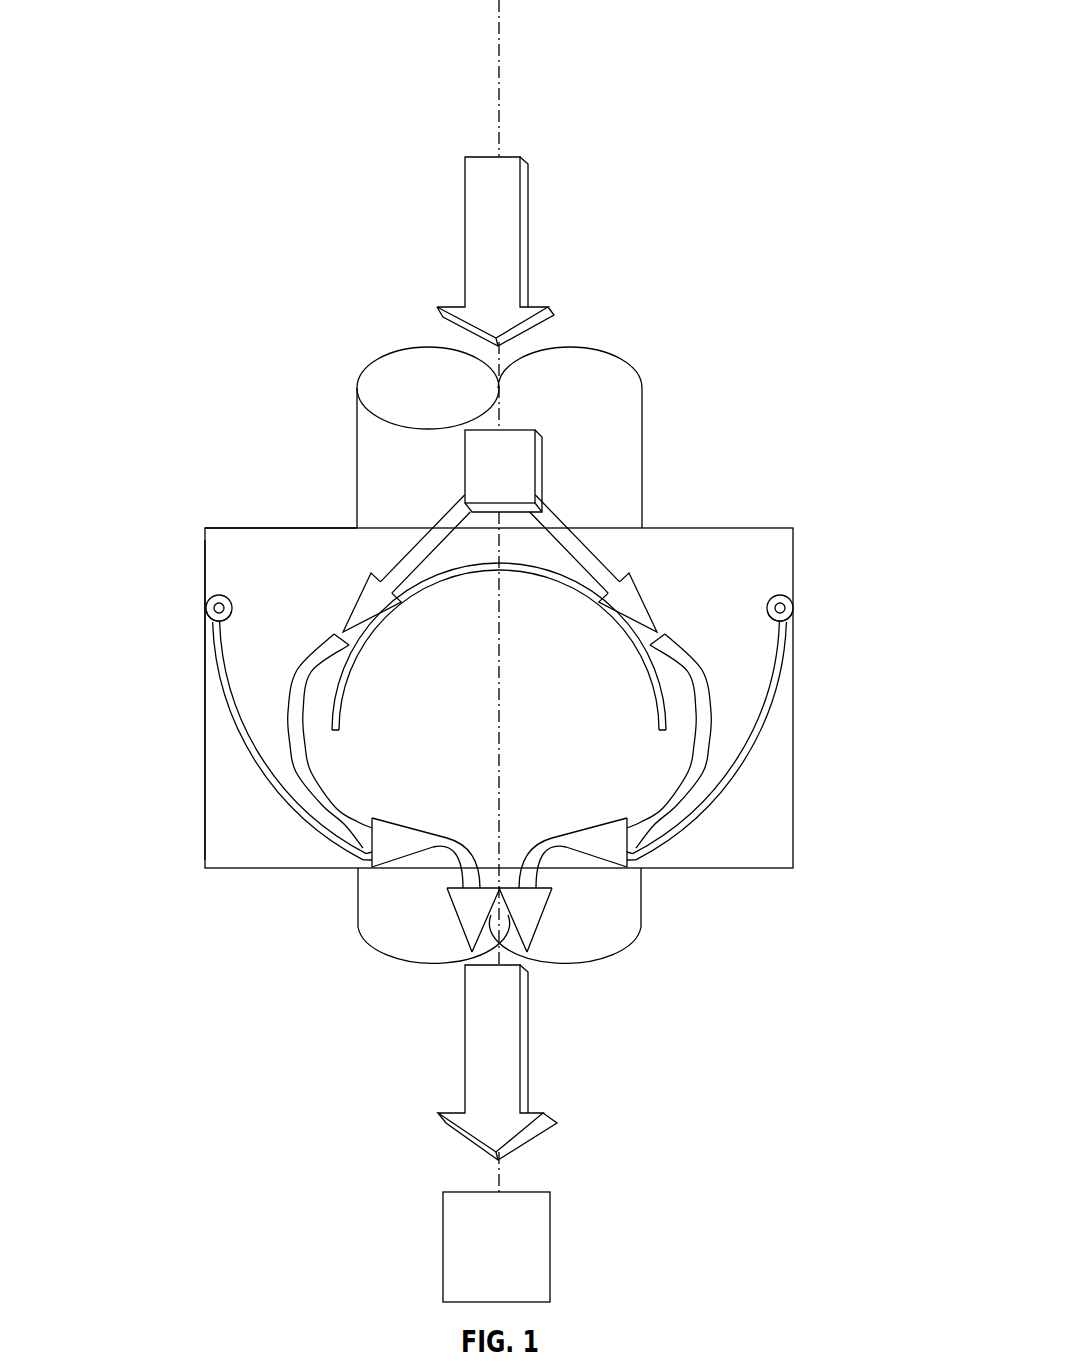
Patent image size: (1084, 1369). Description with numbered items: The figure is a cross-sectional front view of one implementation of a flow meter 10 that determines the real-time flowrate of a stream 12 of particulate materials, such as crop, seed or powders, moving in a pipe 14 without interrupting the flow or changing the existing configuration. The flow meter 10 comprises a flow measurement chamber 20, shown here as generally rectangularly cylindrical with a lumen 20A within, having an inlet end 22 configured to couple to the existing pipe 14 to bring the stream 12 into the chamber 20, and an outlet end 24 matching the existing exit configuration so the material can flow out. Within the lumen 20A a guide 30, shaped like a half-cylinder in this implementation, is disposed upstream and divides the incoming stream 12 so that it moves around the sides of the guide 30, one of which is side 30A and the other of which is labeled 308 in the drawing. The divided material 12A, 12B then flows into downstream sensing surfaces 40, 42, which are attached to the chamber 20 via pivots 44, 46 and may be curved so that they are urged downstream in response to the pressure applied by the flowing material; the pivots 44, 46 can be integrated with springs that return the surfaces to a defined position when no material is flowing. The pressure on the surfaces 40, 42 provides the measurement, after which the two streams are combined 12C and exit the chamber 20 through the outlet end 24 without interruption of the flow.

The flow meter 10 is at (818, 32).
The stream of particulate materials 12 is at (528, 238).
The first material stream 12A is at (287, 730).
The second material stream 12B is at (712, 730).
The combined material stream 12C is at (465, 1040).
The pipe 14 is at (643, 413).
The flow measurement chamber 20 is at (735, 528).
The lumen 20A is at (207, 578).
The inlet end 22 is at (357, 527).
The outlet end 24 is at (647, 872).
The guide 30 is at (553, 583).
The first side of guide 30A is at (352, 673).
The second splitter arc 308 is at (653, 695).
The first sensing surface 40 is at (256, 762).
The second sensing surface 42 is at (743, 762).
The first pivot 44 is at (207, 610).
The second pivot 46 is at (792, 609).